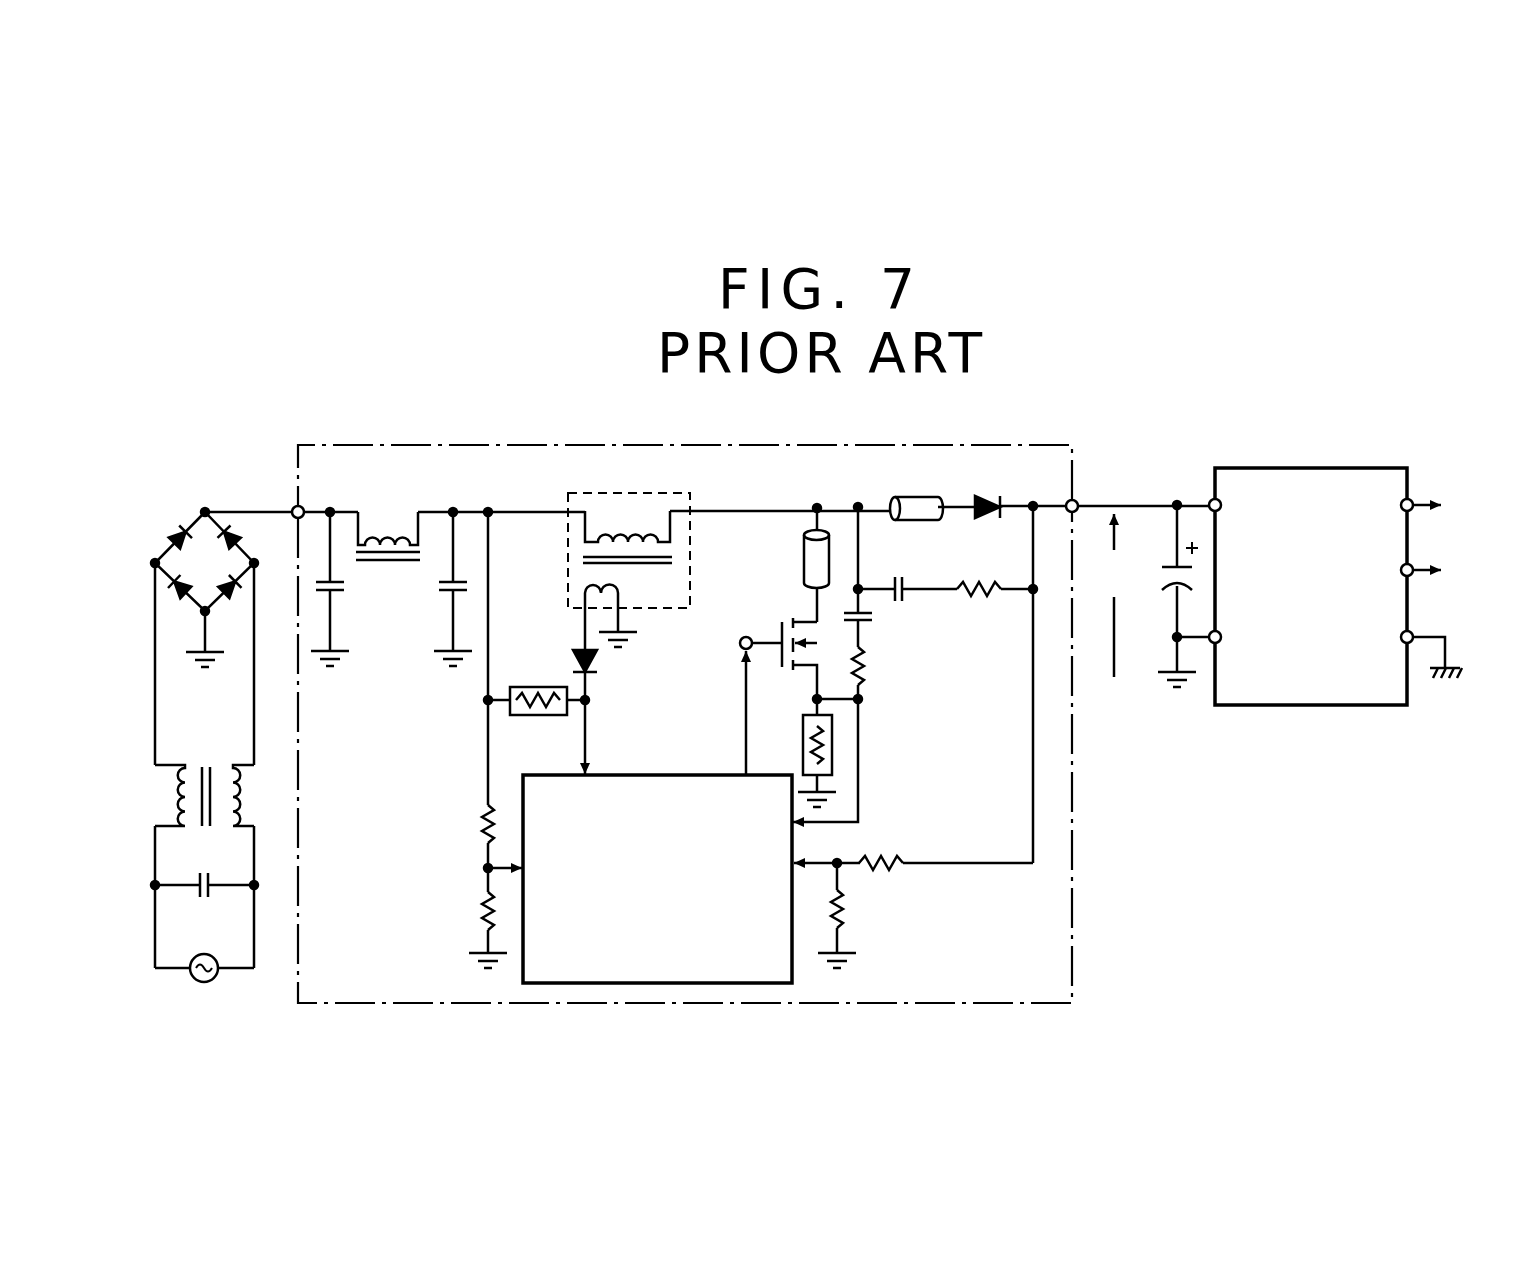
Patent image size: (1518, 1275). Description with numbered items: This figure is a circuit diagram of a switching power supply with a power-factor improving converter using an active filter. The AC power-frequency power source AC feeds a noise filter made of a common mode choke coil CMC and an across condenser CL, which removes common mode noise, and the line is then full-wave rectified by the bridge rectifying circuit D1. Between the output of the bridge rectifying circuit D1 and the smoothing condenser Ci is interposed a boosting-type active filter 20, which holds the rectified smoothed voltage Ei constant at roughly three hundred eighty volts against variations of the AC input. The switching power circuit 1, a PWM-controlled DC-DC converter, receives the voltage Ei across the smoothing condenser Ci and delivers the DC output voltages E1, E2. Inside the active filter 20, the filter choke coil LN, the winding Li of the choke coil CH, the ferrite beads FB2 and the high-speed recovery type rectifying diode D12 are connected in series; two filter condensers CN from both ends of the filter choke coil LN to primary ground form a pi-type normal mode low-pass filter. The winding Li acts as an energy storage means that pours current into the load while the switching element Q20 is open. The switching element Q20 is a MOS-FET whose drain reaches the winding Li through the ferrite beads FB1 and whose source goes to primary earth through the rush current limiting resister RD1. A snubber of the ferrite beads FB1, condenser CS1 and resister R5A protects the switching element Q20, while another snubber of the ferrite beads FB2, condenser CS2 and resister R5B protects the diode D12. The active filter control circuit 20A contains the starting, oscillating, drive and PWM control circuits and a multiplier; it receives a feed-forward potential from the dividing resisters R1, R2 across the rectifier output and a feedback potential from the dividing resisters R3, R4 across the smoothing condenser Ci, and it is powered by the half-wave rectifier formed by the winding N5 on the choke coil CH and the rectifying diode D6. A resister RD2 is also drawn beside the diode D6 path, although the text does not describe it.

The active filter 20 is at (360, 445).
The active filter control circuit 20A is at (560, 985).
The switching power circuit 1 is at (1330, 467).
The bridge rectifying circuit D1 is at (216, 579).
The common mode choke coil CMC is at (204, 781).
The across condenser CL is at (204, 875).
The AC power-frequency power source AC is at (204, 985).
The filter condensers CN is at (391, 587).
The filter choke coil LN is at (388, 520).
The choke coil CH is at (604, 550).
The winding of choke coil Li is at (627, 529).
The winding N5 is at (610, 598).
The rectifying diode D6 is at (601, 712).
The starting resistor RD2 is at (534, 686).
The dividing resister R1 is at (468, 836).
The dividing resister R2 is at (474, 918).
The ferrite beads FB1 is at (823, 548).
The ferrite beads FB2 is at (916, 493).
The switching element Q20 is at (778, 696).
The rush current limiting resister RD1 is at (795, 753).
The condenser CS1 is at (882, 618).
The condenser CS2 is at (907, 575).
The resister R5A is at (884, 673).
The resister R5B is at (995, 607).
The high-speed recovery type rectifying diode D12 is at (997, 523).
The dividing resister R3 is at (913, 847).
The dividing resister R4 is at (849, 915).
The rectified smoothed input voltage Ei is at (1116, 595).
The smoothing condenser Ci is at (1175, 594).
The dc output voltage E1 is at (1445, 508).
The dc output voltage E2 is at (1445, 573).